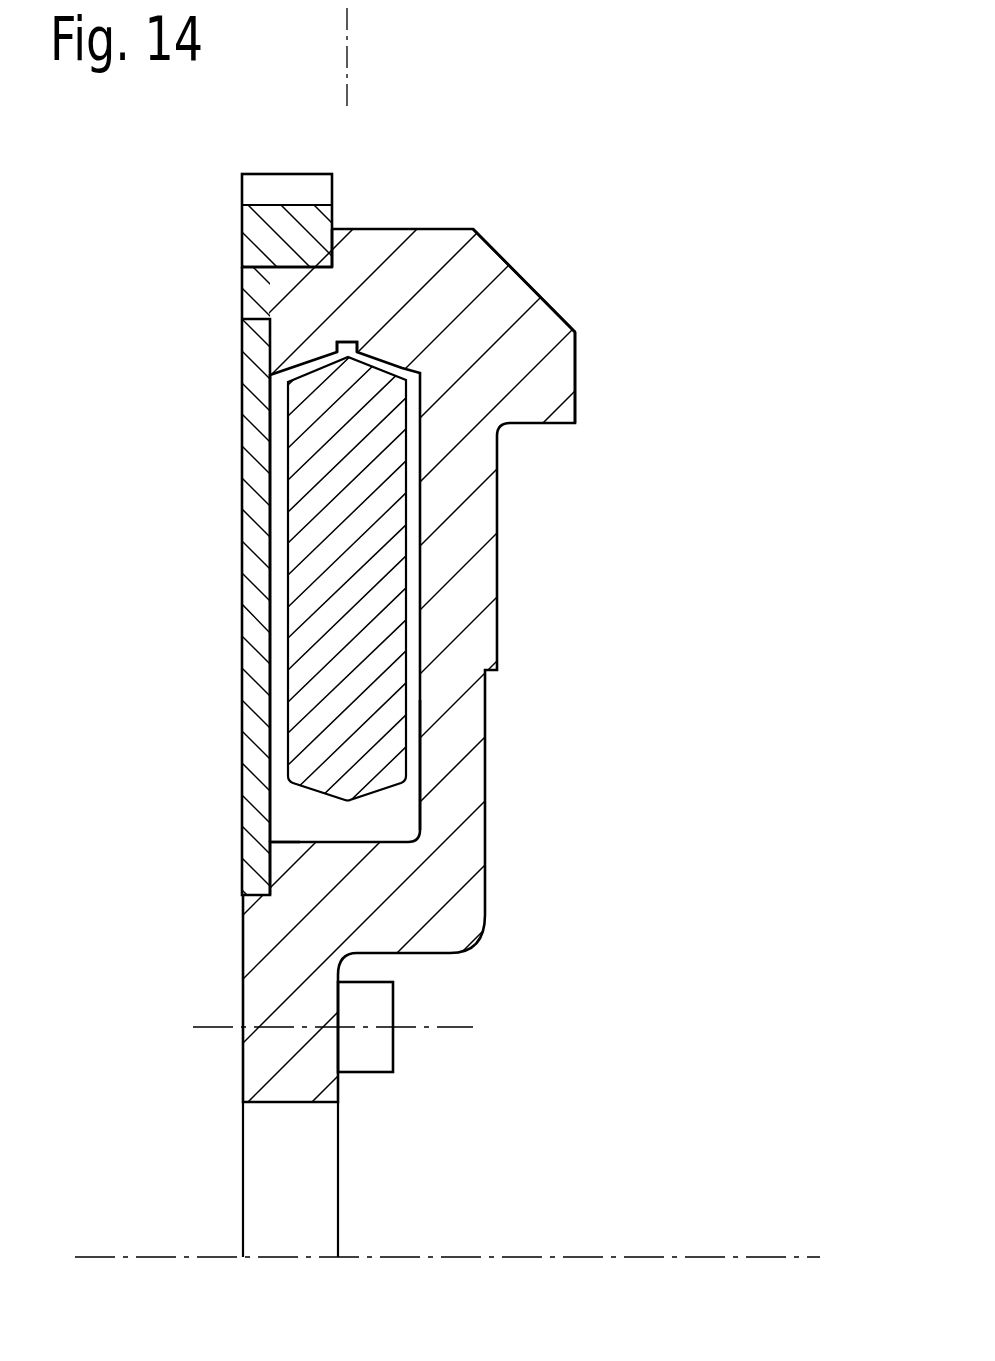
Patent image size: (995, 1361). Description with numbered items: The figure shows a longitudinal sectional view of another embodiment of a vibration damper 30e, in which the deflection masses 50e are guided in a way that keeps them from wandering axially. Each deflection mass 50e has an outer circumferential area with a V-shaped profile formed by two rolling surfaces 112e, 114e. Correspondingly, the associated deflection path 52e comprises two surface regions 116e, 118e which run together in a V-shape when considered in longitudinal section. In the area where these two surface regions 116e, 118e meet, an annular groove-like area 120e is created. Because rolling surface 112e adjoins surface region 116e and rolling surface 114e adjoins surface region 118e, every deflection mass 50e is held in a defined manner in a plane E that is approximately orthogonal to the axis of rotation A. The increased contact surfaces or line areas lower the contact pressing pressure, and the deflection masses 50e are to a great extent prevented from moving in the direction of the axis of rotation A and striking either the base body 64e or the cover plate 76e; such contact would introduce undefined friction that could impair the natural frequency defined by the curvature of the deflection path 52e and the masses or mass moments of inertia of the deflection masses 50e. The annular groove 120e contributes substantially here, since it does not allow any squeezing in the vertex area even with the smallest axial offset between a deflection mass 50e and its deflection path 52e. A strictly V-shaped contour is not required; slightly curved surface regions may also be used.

The vibration damper 30e is at (553, 267).
The deflection mass 50e is at (395, 645).
The deflection path 52e is at (401, 364).
The base body 64e is at (570, 322).
The cover plate 76e is at (242, 712).
The rolling surface 112e is at (272, 842).
The rolling surface 114e is at (381, 794).
The surface region 116e is at (298, 366).
The surface region 118e is at (452, 310).
The annular groove 120e is at (350, 350).
The plane E is at (348, 30).
The axis of rotation A is at (563, 1257).